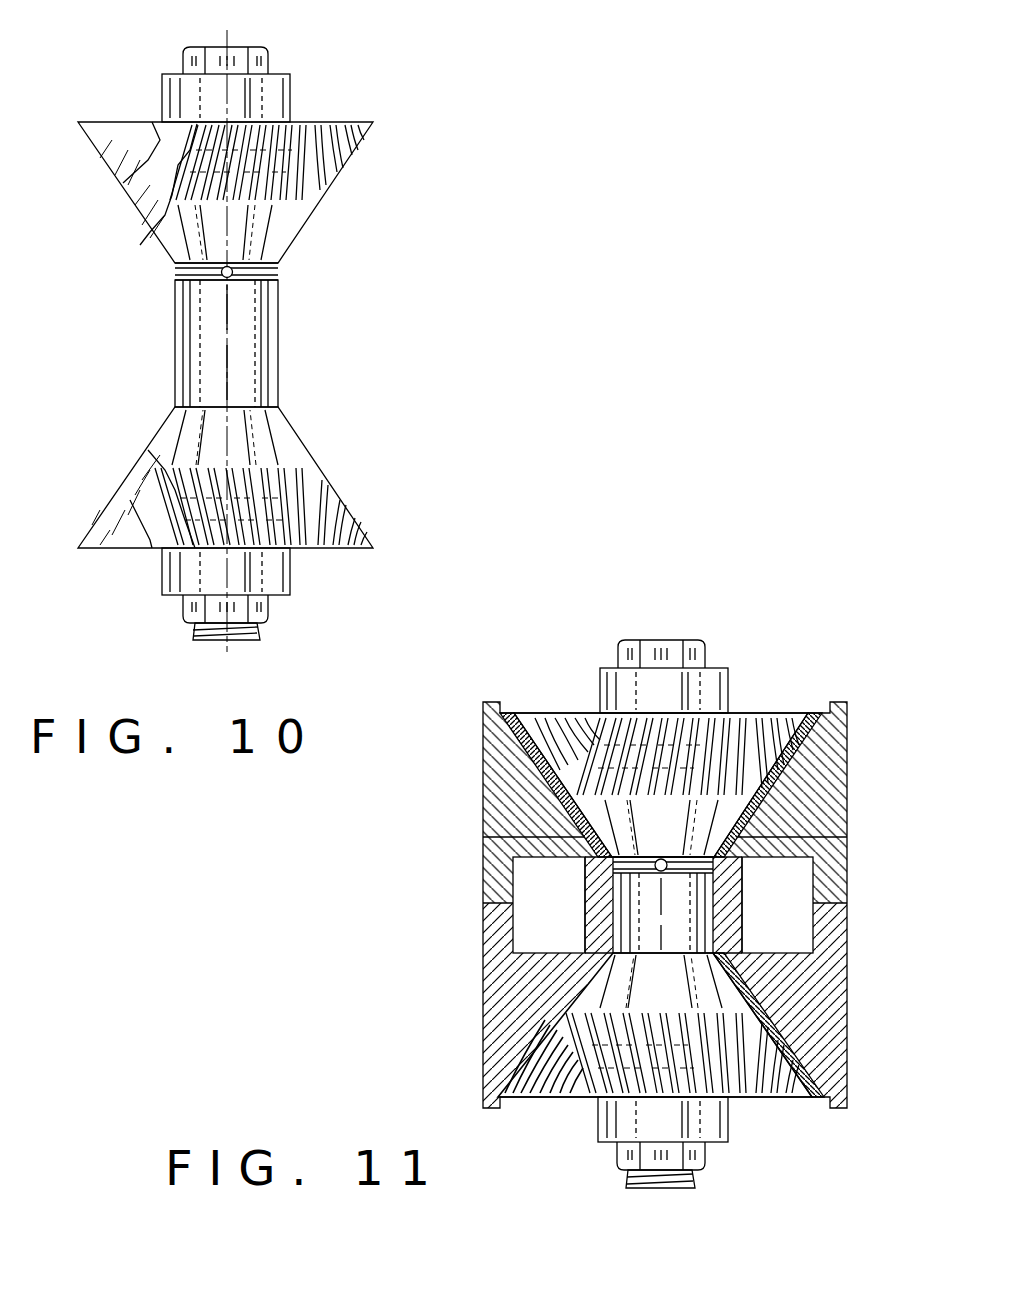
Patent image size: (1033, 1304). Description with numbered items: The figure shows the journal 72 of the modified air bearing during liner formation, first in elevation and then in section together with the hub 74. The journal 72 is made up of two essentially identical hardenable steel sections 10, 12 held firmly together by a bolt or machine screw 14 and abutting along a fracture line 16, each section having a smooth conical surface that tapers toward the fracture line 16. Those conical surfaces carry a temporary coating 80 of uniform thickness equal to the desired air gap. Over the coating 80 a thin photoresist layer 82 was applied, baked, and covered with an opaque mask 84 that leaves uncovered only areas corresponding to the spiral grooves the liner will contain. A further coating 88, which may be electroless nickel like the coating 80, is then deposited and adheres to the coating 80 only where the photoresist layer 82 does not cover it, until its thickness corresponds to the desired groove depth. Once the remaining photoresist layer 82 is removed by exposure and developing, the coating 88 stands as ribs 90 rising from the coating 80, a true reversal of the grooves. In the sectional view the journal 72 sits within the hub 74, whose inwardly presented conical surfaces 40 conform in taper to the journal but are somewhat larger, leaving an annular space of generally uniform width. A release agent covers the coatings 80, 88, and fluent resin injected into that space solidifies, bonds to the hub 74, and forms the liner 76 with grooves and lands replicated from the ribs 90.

In FIG. 10, the section 10 is at (308, 205).
In FIG. 11, the section 10 is at (562, 713).
In FIG. 10, the section 12 is at (312, 455).
In FIG. 11, the section 12 is at (760, 1097).
In FIG. 10, the bolt or machine screw 14 is at (258, 60).
In FIG. 11, the bolt or machine screw 14 is at (700, 652).
In FIG. 10, the fracture line 16 is at (277, 272).
In FIG. 11, the fracture line 16 is at (663, 865).
In FIG. 11, the conical surfaces 40 is at (735, 822).
In FIG. 10, the journal 72 is at (158, 343).
In FIG. 11, the journal 72 is at (555, 1097).
In FIG. 11, the hub 74 is at (847, 768).
In FIG. 11, the liner 76 is at (548, 772).
In FIG. 10, the coating 80 is at (100, 163).
In FIG. 11, the coating 80 is at (615, 820).
In FIG. 10, the photoresist layer 82 is at (145, 218).
In FIG. 10, the mask 84 is at (170, 243).
In FIG. 10, the further coating 88 is at (292, 122).
In FIG. 11, the ribs 90 is at (752, 716).